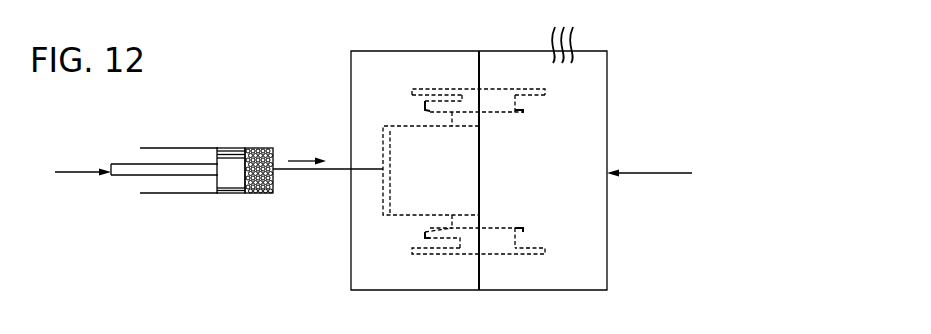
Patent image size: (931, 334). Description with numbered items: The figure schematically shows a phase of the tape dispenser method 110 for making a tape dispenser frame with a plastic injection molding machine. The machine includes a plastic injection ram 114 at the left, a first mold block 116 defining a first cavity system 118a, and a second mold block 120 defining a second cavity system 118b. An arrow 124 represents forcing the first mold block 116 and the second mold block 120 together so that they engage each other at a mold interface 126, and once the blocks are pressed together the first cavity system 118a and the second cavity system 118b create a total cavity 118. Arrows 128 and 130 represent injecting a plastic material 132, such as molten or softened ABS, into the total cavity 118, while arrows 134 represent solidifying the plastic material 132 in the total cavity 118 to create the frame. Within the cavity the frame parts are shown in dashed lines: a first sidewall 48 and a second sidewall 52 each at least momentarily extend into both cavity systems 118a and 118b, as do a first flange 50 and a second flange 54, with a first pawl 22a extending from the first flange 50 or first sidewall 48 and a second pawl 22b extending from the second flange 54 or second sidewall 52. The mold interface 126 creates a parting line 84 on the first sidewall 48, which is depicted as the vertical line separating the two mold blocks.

The tape dispenser method 110 is at (136, 106).
The arrow 130 is at (78, 175).
The plastic injection ram 114 is at (225, 195).
The plastic material 132 is at (259, 184).
The arrow 128 is at (303, 158).
The first mold block 116 is at (350, 88).
The second mold block 120 is at (608, 90).
The parting line 84 is at (480, 89).
The arrows 134 is at (574, 40).
The arrow 124 is at (660, 172).
The mold interface 126 is at (468, 147).
The first sidewall 48 is at (433, 88).
The first pawl 22a is at (422, 106).
The first flange 50 is at (524, 112).
The total cavity 118 is at (492, 106).
The first cavity system 118a is at (470, 96).
The second cavity system 118b is at (505, 106).
The second pawl 22b is at (422, 235).
The second flange 54 is at (524, 230).
The second sidewall 52 is at (435, 257).